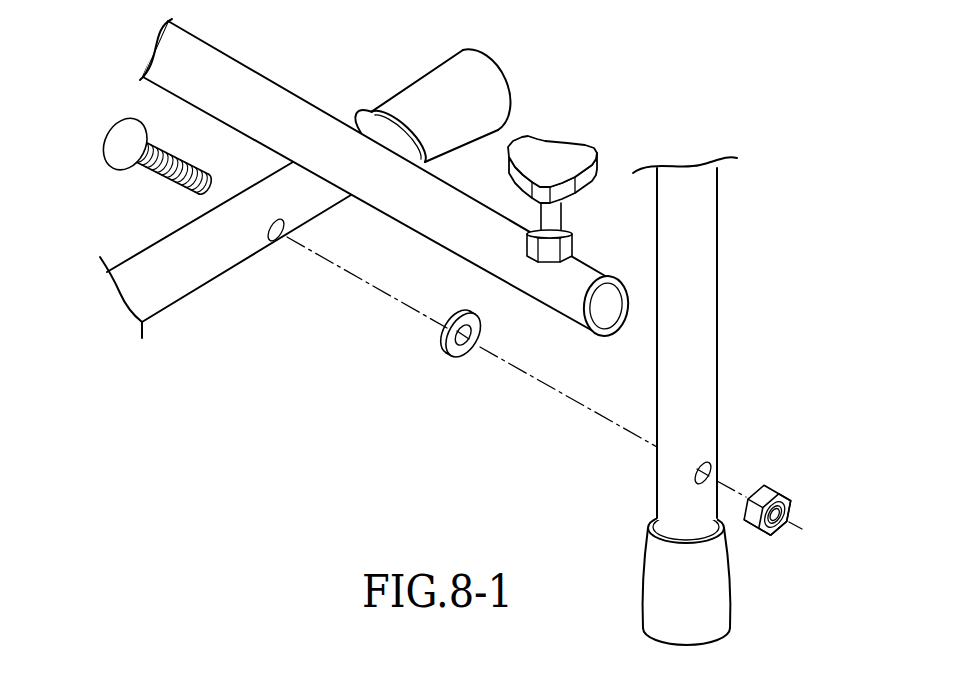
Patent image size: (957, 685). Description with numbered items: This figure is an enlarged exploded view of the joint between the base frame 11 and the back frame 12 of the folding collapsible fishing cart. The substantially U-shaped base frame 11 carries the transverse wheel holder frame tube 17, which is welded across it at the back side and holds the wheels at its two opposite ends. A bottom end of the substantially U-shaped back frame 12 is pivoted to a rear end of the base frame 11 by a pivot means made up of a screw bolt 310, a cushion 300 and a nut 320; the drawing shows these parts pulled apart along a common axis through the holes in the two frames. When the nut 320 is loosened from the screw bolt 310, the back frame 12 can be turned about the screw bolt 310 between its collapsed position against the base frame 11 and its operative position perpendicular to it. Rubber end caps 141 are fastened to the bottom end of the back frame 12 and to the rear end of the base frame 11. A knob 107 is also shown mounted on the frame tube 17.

The base frame 11 is at (172, 290).
The back frame 12 is at (713, 353).
The transverse wheel holder frame tube 17 is at (215, 50).
The locking knob 107 is at (547, 148).
The rubber end cap 141 is at (477, 65).
The cushion 300 is at (465, 358).
The screw bolt 310 is at (112, 143).
The nut 320 is at (780, 483).